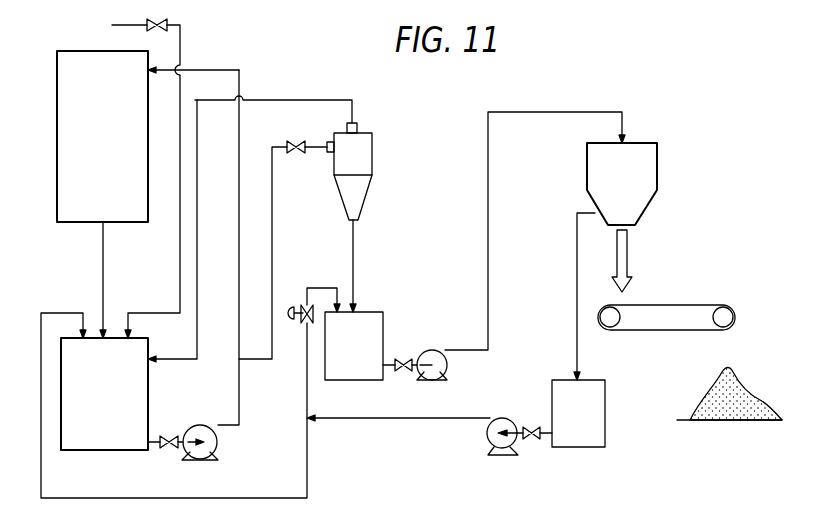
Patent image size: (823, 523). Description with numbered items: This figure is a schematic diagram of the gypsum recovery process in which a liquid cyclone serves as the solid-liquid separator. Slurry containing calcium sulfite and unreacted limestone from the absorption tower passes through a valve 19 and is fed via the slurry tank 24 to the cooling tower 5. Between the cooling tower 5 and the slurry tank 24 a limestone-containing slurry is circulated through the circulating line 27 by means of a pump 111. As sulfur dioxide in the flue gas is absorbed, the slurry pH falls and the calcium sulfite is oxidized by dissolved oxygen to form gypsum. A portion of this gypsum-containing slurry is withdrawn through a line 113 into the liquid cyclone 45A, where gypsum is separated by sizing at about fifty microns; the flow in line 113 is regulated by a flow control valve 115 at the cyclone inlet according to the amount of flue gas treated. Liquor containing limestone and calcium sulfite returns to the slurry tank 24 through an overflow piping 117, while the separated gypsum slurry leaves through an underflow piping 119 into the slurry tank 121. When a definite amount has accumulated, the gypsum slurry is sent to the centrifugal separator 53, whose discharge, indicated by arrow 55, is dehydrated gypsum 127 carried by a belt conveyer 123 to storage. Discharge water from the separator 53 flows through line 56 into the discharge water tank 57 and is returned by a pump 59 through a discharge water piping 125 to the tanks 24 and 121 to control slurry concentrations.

The cooling tower 5 is at (94, 156).
The valve 19 is at (165, 30).
The slurry tank 24 is at (92, 405).
The circulating line 27 is at (239, 235).
The liquid cyclone 45A is at (372, 150).
The centrifugal separator 53 is at (609, 190).
The discharge arrow 55 is at (627, 257).
The line 56 is at (577, 280).
The discharge water tank 57 is at (565, 420).
The pump 59 is at (512, 418).
The pump 111 is at (217, 442).
The line 113 is at (273, 237).
The flow control valve 115 is at (295, 141).
The overflow piping 117 is at (278, 100).
The underflow piping 119 is at (355, 253).
The slurry tank 121 is at (338, 356).
The belt conveyer 123 is at (680, 305).
The discharge water piping 125 is at (402, 419).
The gypsum 127 is at (728, 368).